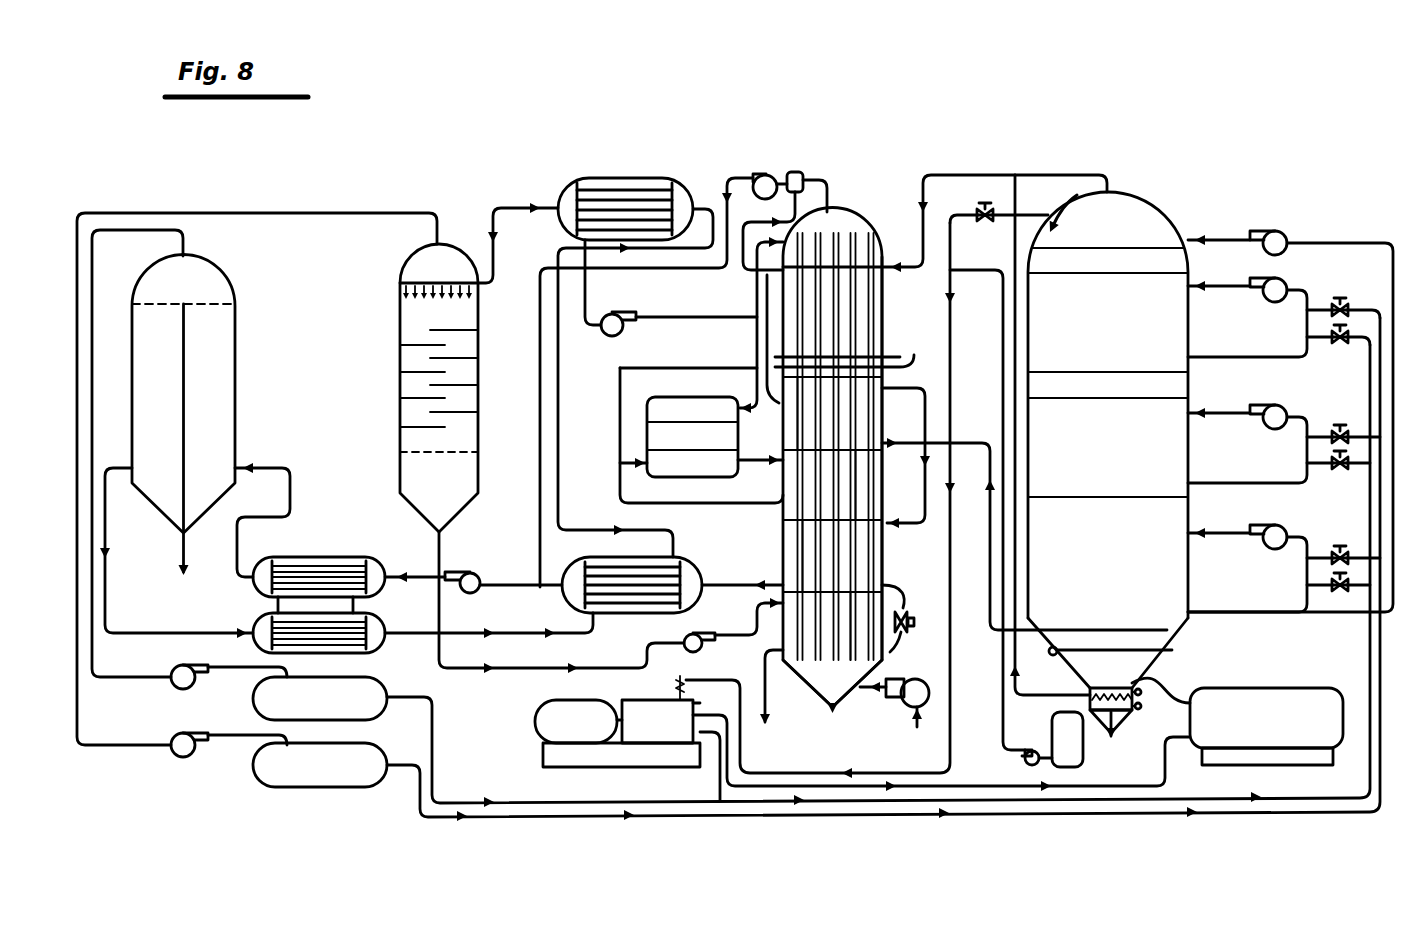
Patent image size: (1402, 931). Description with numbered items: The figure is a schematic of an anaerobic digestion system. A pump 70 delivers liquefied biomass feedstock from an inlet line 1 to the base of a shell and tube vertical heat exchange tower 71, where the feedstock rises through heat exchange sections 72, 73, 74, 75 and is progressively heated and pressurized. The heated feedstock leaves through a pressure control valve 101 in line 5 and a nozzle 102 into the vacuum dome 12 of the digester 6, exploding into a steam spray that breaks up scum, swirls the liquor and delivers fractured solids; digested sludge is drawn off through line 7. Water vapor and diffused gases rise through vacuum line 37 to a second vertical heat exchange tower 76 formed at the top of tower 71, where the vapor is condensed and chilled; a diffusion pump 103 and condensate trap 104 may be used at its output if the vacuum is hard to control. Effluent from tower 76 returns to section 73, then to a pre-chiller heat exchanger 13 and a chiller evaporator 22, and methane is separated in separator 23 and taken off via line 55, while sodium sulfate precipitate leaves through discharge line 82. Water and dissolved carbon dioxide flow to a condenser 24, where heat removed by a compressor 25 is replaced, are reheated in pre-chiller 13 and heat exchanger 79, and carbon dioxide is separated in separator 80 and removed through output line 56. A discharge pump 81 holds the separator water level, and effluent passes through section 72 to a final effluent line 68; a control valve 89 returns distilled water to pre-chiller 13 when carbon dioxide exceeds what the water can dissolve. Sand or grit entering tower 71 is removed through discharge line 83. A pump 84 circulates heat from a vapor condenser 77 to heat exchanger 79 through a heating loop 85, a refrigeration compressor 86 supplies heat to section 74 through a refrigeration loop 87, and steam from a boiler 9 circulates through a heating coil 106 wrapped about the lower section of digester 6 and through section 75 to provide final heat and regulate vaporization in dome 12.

The inlet line 1 is at (903, 738).
The line 5 is at (953, 333).
The digester 6 is at (1114, 457).
The line 7 is at (1118, 736).
The boiler 9 is at (1258, 702).
The vacuum dome 12 is at (1128, 216).
The pre-chiller heat exchanger 13 is at (678, 556).
The chiller evaporator 22 is at (348, 556).
The separator 23 is at (220, 386).
The condenser 24 is at (258, 622).
The compressor 25 is at (372, 612).
The vacuum line 37 is at (1075, 175).
The line 55 is at (95, 276).
The output line 56 is at (326, 208).
The final effluent line 68 is at (772, 704).
The pump 70 is at (926, 688).
The shell and tube vertical heat exchange tower 71 is at (891, 554).
The heat exchange section 72 is at (862, 618).
The heat exchange section 73 is at (800, 556).
The heat exchange section 74 is at (862, 498).
The heat exchange section 75 is at (800, 410).
The second vertical heat exchange tower 76 is at (855, 206).
The vapor condenser 77 is at (884, 312).
The heat exchanger 79 is at (630, 178).
The separator 80 is at (408, 320).
The discharge pump 81 is at (697, 632).
The discharge line 82 is at (182, 548).
The discharge line 83 is at (838, 712).
The pump 84 is at (637, 312).
The heating loop 85 is at (722, 278).
The refrigeration compressor 86 is at (660, 445).
The refrigeration loop 87 is at (757, 368).
The control valve 89 is at (908, 636).
The pressure control valve 101 is at (966, 176).
The nozzle 102 is at (1076, 196).
The diffusion pump 103 is at (757, 174).
The condensate trap 104 is at (803, 172).
The heating coil 106 is at (1150, 648).